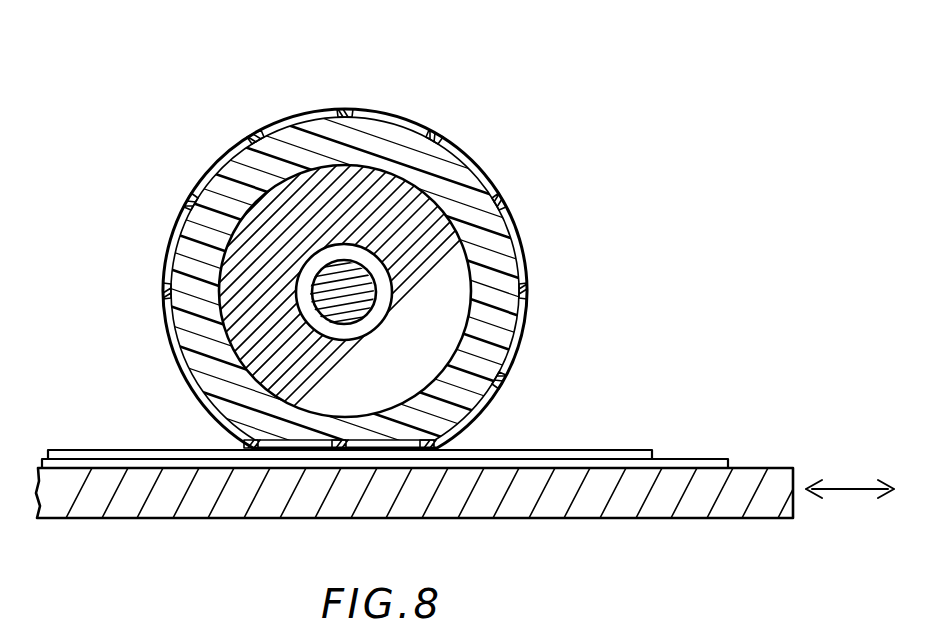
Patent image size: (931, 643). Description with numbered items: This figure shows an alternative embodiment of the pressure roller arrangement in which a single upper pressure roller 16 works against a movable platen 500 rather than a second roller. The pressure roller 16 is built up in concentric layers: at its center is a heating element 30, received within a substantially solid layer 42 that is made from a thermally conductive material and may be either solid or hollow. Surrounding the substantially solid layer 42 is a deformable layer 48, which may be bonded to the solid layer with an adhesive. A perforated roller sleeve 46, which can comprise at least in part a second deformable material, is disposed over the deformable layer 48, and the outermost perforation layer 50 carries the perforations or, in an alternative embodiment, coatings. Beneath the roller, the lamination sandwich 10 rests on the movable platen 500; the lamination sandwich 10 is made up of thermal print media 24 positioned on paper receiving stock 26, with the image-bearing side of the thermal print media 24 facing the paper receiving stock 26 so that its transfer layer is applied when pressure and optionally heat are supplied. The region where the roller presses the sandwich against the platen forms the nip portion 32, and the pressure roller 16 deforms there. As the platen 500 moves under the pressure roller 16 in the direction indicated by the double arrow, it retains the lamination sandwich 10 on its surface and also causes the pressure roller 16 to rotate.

The upper pressure roller 16 is at (443, 118).
The perforation layer 50 is at (338, 111).
The deformable layer 48 is at (273, 155).
The substantially solid layer 42 is at (240, 238).
The perforated roller sleeve 46 is at (480, 182).
The heating element 30 is at (345, 294).
The nip portion 32 is at (258, 384).
The lamination sandwich 10 is at (108, 436).
The thermal print media 24 is at (573, 450).
The paper receiving stock 26 is at (670, 460).
The movable platen 500 is at (683, 519).